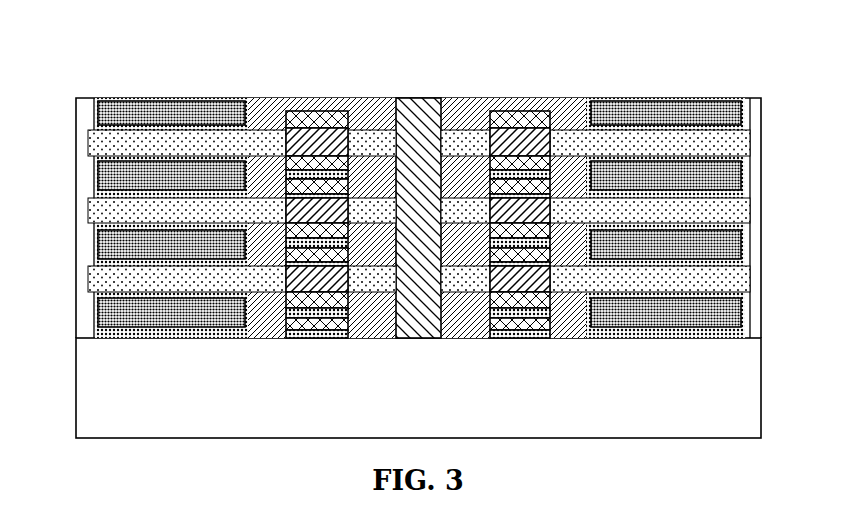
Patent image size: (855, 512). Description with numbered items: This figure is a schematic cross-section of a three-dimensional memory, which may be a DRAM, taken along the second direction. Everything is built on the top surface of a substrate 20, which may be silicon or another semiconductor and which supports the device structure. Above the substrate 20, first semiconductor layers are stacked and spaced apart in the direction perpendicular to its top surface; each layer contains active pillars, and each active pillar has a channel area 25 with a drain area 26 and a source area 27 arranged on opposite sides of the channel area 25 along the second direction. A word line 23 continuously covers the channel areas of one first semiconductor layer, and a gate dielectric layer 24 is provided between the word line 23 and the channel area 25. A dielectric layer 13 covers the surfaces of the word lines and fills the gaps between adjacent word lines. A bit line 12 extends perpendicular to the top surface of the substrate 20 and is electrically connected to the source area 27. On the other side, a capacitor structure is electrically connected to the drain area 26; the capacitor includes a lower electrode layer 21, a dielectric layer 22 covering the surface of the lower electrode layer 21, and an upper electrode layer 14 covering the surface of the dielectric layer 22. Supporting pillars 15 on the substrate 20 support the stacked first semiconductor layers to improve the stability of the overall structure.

The bit line 12 is at (413, 317).
The dielectric layer 13 is at (505, 100).
The upper electrode layer 14 is at (90, 243).
The supporting pillar 15 is at (68, 123).
The substrate 20 is at (753, 402).
The lower electrode layer 21 is at (86, 214).
The dielectric layer 22 is at (88, 170).
The word line 23 is at (530, 110).
The gate dielectric layer 24 is at (483, 118).
The channel area 25 is at (308, 135).
The drain area 26 is at (263, 138).
The source area 27 is at (358, 132).